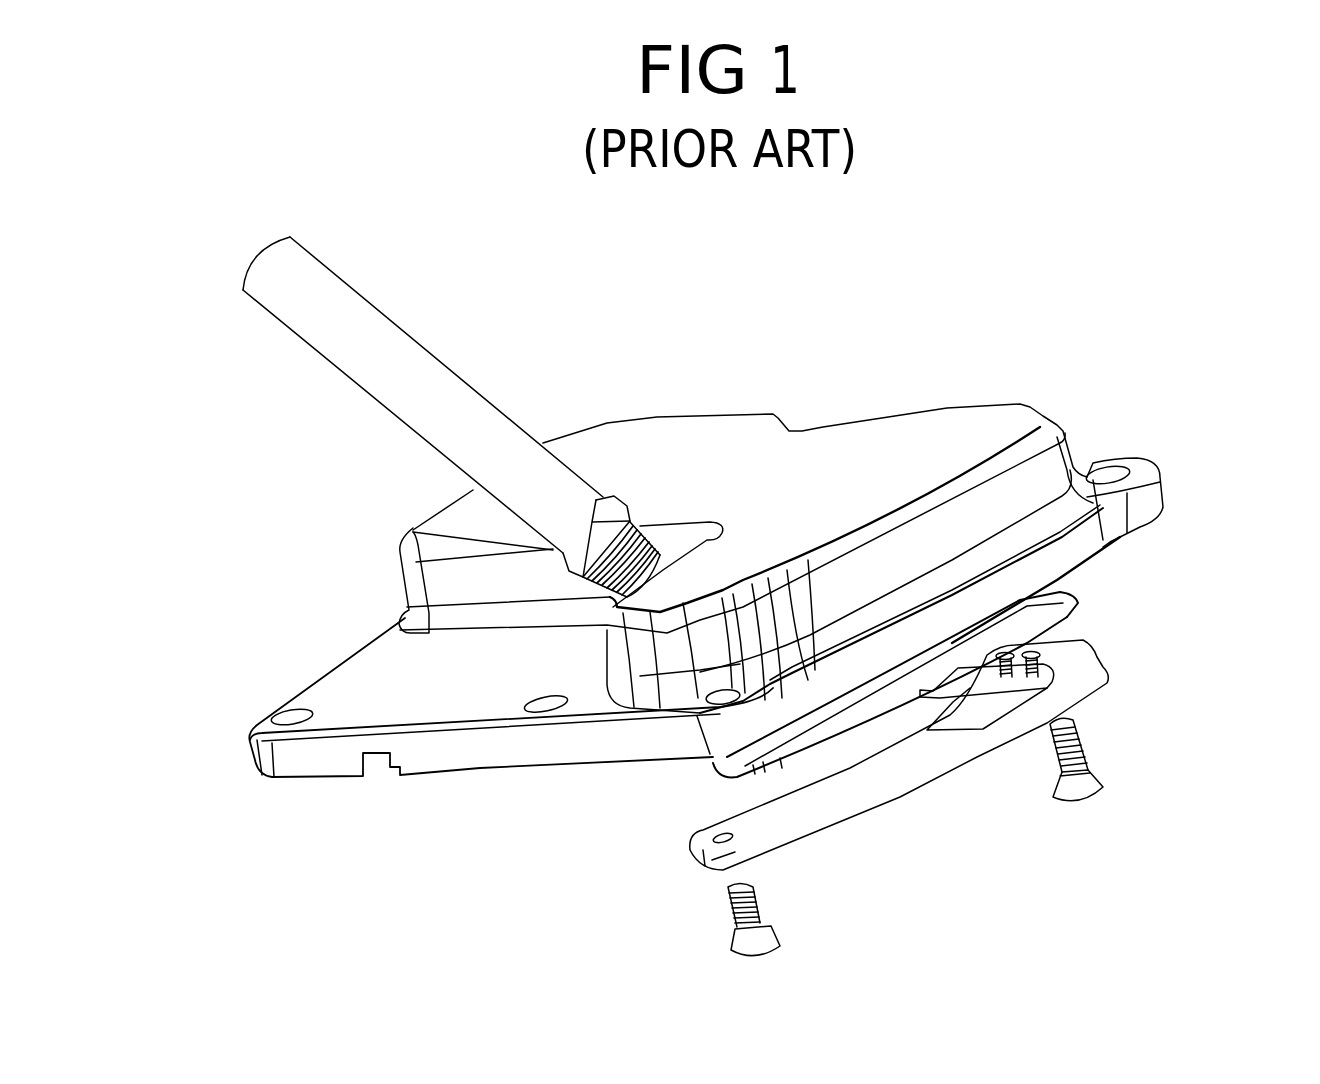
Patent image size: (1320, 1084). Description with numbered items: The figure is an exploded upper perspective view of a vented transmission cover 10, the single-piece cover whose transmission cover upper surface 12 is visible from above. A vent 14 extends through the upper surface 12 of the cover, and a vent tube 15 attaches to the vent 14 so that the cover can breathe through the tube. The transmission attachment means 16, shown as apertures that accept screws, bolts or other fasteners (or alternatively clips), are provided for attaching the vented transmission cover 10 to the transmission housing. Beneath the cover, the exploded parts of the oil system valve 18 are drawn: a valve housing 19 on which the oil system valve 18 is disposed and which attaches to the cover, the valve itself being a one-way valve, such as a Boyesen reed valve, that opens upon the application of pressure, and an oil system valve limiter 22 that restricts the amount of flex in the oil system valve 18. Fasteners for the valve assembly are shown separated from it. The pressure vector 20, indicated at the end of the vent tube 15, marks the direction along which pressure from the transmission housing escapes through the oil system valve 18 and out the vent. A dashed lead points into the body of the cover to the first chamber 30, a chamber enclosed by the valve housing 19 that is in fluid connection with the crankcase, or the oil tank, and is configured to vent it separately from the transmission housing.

The vented transmission cover 10 is at (705, 569).
The transmission cover upper surface 12 is at (781, 558).
The vent 14 is at (617, 500).
The vent tube 15 is at (413, 340).
The transmission attachment means 16 is at (287, 712).
The oil system valve 18 is at (983, 733).
The valve housing 19 is at (1098, 663).
The pressure vector 20 is at (258, 258).
The oil system valve limiter 22 is at (955, 700).
The first chamber 30 is at (998, 504).